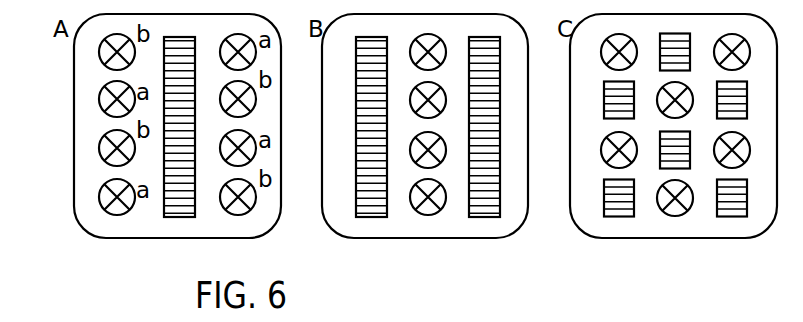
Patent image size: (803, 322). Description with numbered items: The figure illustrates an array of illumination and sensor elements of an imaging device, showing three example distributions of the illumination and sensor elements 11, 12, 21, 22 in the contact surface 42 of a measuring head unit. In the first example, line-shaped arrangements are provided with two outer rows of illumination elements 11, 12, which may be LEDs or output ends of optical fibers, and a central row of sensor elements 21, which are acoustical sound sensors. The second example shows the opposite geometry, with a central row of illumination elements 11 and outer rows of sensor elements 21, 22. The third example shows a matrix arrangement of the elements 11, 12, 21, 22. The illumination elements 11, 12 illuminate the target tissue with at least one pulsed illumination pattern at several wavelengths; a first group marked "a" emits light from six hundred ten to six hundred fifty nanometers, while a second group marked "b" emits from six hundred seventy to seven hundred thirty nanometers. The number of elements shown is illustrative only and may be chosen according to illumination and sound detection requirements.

The illumination element 11 is at (103, 196).
The illumination element 12 is at (247, 198).
The sensor element 21 is at (178, 213).
The sensor element 22 is at (477, 213).
The contact surface 42 is at (97, 120).